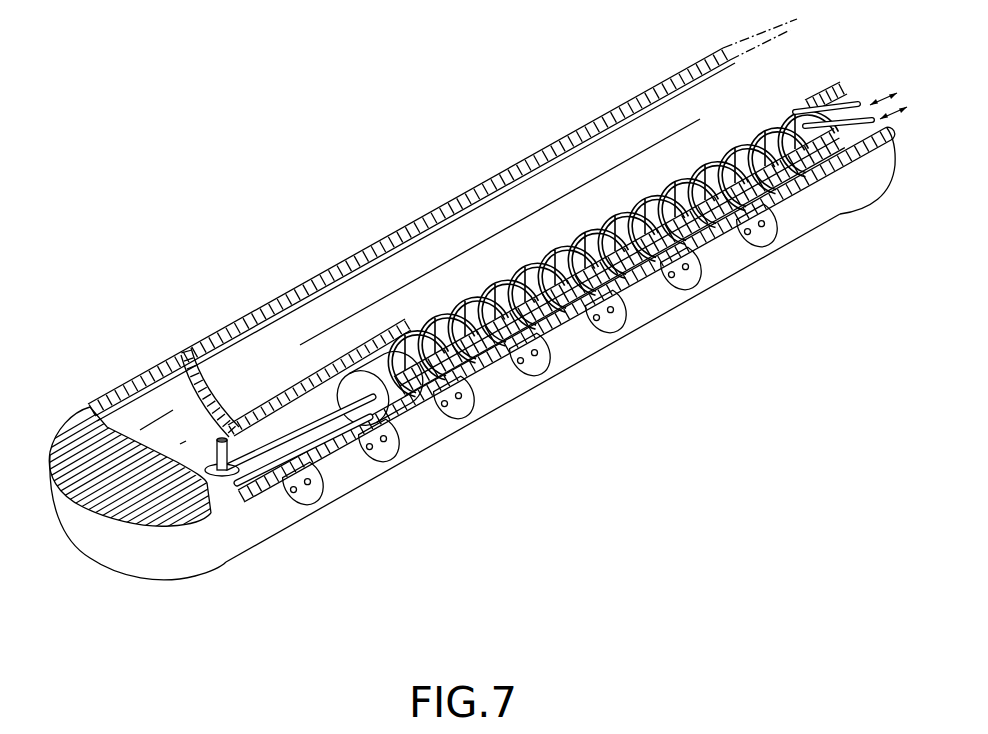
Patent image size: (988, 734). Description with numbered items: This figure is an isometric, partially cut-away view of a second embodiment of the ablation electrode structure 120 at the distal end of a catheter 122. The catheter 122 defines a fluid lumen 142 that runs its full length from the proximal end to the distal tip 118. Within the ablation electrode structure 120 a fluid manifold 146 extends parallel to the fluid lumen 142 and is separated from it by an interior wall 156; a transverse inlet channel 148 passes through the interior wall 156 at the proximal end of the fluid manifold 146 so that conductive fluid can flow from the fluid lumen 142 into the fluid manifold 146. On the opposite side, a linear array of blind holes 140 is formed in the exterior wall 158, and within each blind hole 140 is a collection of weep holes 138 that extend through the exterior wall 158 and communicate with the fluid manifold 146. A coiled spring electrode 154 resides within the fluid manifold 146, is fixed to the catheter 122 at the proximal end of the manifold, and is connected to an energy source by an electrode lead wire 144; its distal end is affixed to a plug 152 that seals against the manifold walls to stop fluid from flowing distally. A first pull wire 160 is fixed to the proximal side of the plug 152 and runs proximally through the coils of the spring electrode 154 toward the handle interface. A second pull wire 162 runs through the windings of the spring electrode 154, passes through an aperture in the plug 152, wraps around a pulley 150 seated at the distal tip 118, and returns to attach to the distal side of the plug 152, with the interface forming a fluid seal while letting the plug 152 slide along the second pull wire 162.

The distal tip 118 is at (95, 542).
The ablation electrode structure 120 is at (563, 96).
The catheter 122 is at (641, 100).
The weep holes 138 is at (605, 300).
The blind holes 140 is at (467, 416).
The fluid lumen 142 is at (386, 278).
The electrode lead wire 144 is at (856, 160).
The fluid manifold 146 is at (635, 281).
The transverse inlet channel 148 is at (773, 127).
The pulley 150 is at (209, 520).
The plug 152 is at (366, 365).
The spring electrode 154 is at (494, 285).
The interior wall 156 is at (305, 395).
The exterior wall 158 is at (490, 367).
The first pull wire 160 is at (855, 100).
The second pull wire 162 is at (348, 420).